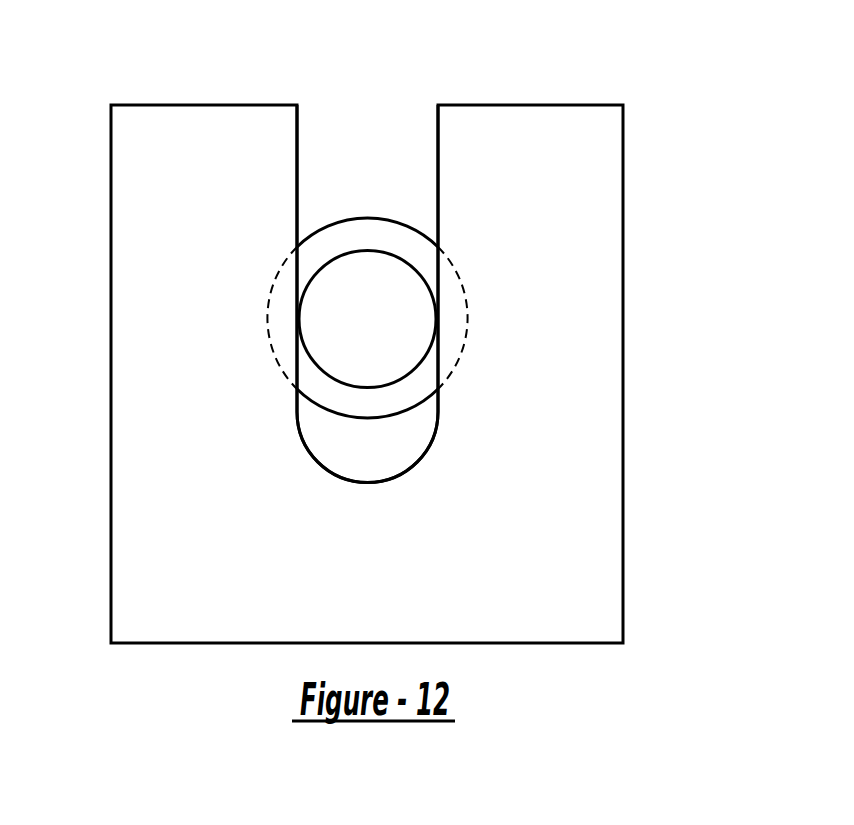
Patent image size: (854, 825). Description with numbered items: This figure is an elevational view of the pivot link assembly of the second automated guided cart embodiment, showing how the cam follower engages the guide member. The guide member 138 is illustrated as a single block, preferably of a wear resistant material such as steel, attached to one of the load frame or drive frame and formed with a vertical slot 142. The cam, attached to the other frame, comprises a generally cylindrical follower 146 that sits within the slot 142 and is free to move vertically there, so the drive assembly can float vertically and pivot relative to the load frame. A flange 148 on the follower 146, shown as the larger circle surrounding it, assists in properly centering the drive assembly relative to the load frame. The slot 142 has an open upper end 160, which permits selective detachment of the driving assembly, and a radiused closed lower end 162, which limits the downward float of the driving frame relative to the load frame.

The guide member 138 is at (635, 220).
The vertical slot 142 is at (297, 174).
The follower 146 is at (312, 367).
The flange 148 is at (377, 232).
The open upper end 160 is at (438, 105).
The radiused closed lower end 162 is at (325, 466).